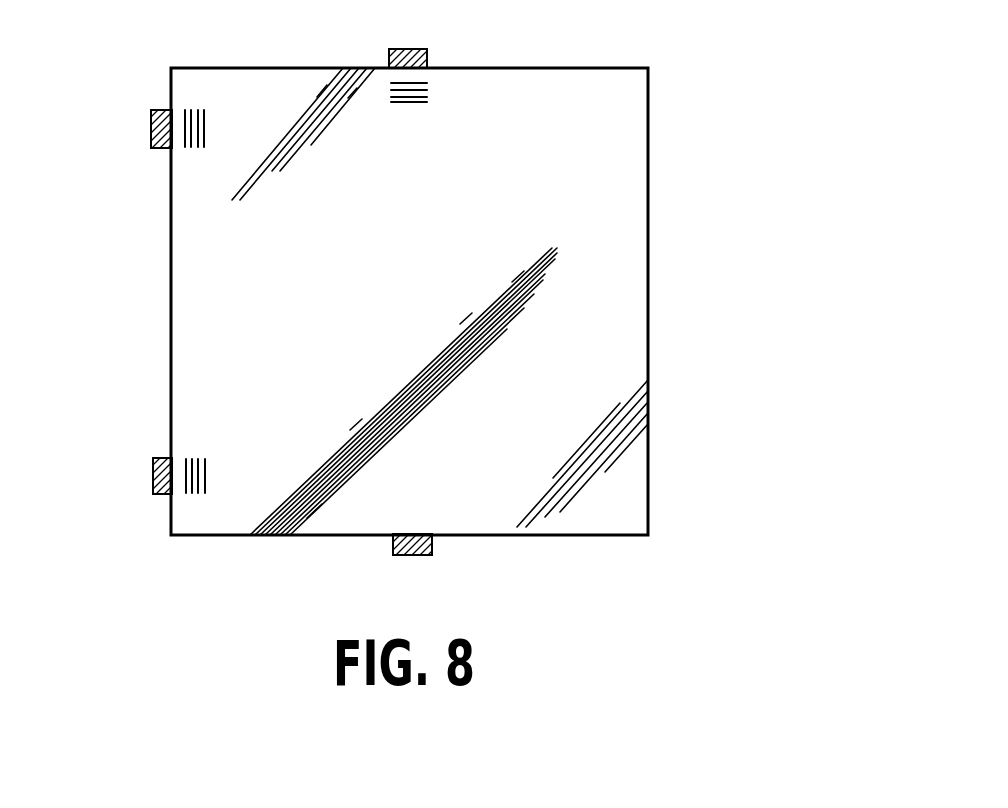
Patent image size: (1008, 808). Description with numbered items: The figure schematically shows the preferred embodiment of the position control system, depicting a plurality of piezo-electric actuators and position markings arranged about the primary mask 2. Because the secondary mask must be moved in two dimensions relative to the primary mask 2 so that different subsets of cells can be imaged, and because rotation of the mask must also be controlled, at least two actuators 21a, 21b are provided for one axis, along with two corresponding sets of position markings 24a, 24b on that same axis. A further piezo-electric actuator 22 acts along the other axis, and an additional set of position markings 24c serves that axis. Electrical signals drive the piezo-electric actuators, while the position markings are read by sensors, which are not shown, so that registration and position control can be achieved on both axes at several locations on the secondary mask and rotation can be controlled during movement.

The primary mask 2 is at (648, 112).
The piezo-electric actuator 21a is at (151, 127).
The piezo-electric actuator 21b is at (153, 476).
The piezo-electric actuator 22 is at (432, 545).
The position markings 24a is at (205, 138).
The position markings 24b is at (205, 480).
The position markings 24c is at (433, 100).